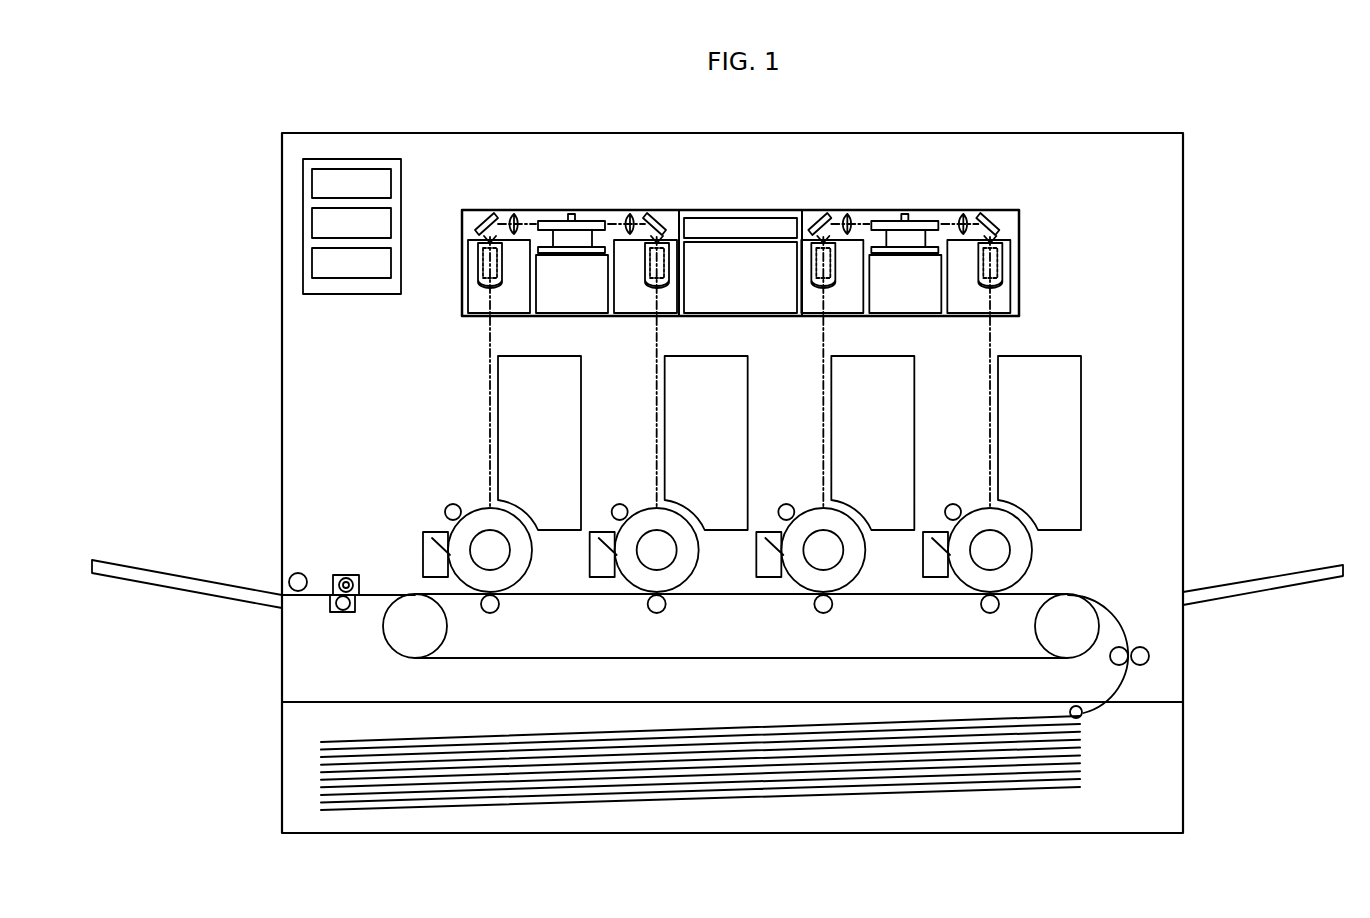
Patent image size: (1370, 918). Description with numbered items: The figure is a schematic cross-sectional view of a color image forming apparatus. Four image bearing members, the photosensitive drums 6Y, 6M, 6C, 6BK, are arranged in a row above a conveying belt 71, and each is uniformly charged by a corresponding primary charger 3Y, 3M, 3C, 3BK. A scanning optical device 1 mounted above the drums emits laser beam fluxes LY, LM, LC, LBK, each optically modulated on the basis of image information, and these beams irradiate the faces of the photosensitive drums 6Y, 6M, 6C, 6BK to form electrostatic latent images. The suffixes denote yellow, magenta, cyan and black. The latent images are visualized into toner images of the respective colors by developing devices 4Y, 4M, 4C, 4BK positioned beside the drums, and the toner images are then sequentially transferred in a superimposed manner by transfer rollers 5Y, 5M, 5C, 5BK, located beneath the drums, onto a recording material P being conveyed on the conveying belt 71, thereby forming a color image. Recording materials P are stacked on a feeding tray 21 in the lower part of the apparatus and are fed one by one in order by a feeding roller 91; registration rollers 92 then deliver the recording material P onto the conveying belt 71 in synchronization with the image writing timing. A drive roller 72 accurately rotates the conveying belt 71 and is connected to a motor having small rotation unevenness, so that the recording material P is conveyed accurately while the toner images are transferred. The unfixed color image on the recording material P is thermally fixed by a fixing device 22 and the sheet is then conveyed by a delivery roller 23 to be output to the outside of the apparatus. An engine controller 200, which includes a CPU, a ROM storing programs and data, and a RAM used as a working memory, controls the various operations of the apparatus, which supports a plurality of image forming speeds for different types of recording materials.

The scanning optical device 1 is at (845, 210).
The engine controller 200 is at (401, 182).
The laser beam flux LY is at (492, 350).
The laser beam flux LM is at (692, 372).
The laser beam flux LC is at (855, 372).
The laser beam flux LBK is at (1031, 372).
The primary charger 3Y is at (454, 504).
The primary charger 3M is at (623, 491).
The primary charger 3C is at (792, 491).
The primary charger 3BK is at (956, 491).
The developing device 4Y is at (581, 421).
The developing device 4M is at (743, 443).
The developing device 4C is at (907, 443).
The developing device 4BK is at (1082, 443).
The transfer roller 5Y is at (490, 614).
The transfer roller 5M is at (653, 626).
The transfer roller 5C is at (817, 626).
The transfer roller 5BK is at (993, 626).
The photosensitive drum 6Y is at (532, 549).
The photosensitive drum 6M is at (674, 550).
The photosensitive drum 6C is at (838, 550).
The photosensitive drum 6BK is at (1014, 550).
The fixing device 22 is at (352, 573).
The delivery roller 23 is at (301, 572).
The conveying belt 71 is at (806, 659).
The drive roller 72 is at (1085, 619).
The feeding roller 91 is at (1074, 706).
The registration rollers 92 is at (1141, 647).
The feeding tray 21 is at (283, 803).
The recording material P is at (338, 744).